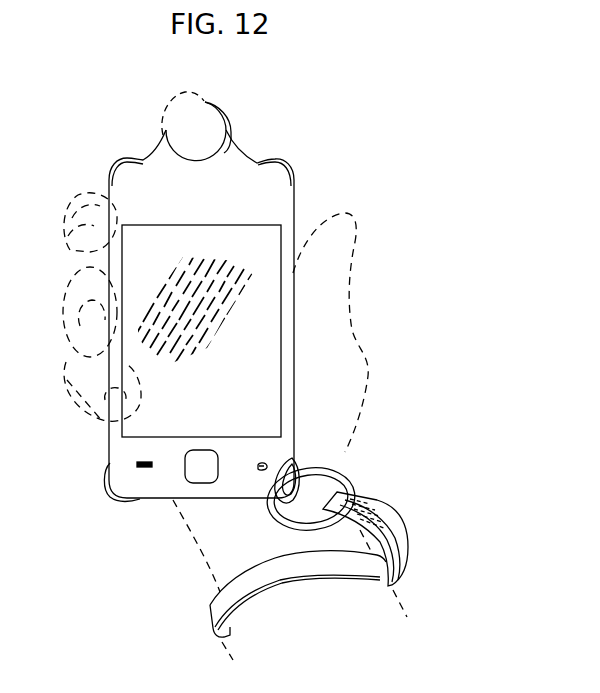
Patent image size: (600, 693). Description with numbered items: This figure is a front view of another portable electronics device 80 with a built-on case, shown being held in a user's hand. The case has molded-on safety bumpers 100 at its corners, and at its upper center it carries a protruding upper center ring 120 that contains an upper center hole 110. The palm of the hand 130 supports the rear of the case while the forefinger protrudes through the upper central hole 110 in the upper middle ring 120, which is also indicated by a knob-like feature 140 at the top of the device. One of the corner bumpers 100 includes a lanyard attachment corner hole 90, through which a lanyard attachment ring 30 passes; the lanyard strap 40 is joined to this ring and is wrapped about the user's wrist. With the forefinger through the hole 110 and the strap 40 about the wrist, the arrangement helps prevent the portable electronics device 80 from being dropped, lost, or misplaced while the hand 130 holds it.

The cell phone modified to incorporate lanyard attachment feature 80 is at (308, 202).
The knob 140 is at (175, 112).
The protruding upper center ring 120 is at (209, 101).
The upper center hole 110 is at (222, 122).
The molded on safety bumpers 100 is at (120, 160).
The lanyard attachment corner holes 90 is at (293, 460).
The lanyard attachment ring 30 is at (357, 490).
The lanyard strap 40 is at (213, 602).
The hand holding rear of handheld case 130 is at (397, 283).